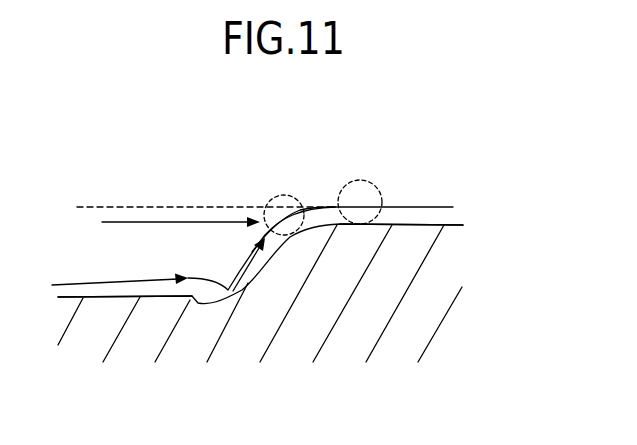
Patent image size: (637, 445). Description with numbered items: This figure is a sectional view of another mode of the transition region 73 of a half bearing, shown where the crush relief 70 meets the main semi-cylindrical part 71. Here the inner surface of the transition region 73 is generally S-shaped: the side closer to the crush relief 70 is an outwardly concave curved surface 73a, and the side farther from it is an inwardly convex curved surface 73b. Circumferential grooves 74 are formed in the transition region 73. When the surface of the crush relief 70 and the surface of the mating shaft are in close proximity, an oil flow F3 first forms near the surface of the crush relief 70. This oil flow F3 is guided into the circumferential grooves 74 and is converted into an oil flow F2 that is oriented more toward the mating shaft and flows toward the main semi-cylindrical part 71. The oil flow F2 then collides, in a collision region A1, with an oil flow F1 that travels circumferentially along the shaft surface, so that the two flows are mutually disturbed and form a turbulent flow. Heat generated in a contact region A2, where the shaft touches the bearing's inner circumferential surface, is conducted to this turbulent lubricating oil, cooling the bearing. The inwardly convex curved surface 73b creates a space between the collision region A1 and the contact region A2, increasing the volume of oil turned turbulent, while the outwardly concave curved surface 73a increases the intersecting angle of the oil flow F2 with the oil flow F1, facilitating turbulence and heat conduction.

The crush relief 70 is at (146, 198).
The main semi-cylindrical part 71 is at (441, 180).
The transition region 73 is at (236, 199).
The outwardly concave curved surface 73a is at (228, 285).
The inwardly convex curved surface 73b is at (282, 218).
The circumferential grooves 74 is at (456, 217).
The oil flow F1 is at (115, 222).
The oil flow F2 is at (246, 264).
The oil flow F3 is at (98, 283).
The collision region A1 is at (291, 196).
The contact region A2 is at (358, 180).